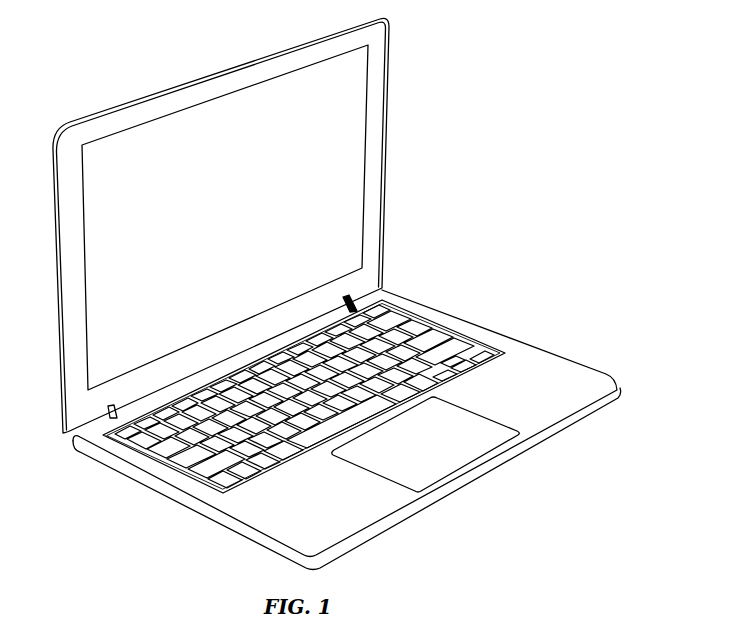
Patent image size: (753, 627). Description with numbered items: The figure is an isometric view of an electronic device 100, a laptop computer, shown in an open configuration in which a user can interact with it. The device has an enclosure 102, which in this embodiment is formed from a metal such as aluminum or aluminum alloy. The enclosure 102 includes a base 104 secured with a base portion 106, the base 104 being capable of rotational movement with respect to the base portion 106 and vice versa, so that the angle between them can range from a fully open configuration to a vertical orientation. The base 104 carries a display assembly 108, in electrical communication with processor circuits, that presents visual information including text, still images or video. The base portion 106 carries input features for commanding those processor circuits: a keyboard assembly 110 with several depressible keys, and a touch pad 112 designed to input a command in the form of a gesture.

The electronic device 100 is at (587, 91).
The enclosure 102 is at (503, 217).
The base 104 is at (383, 267).
The base portion 106 is at (427, 303).
The display assembly 108 is at (263, 228).
The keyboard assembly 110 is at (252, 495).
The touch pad 112 is at (448, 455).